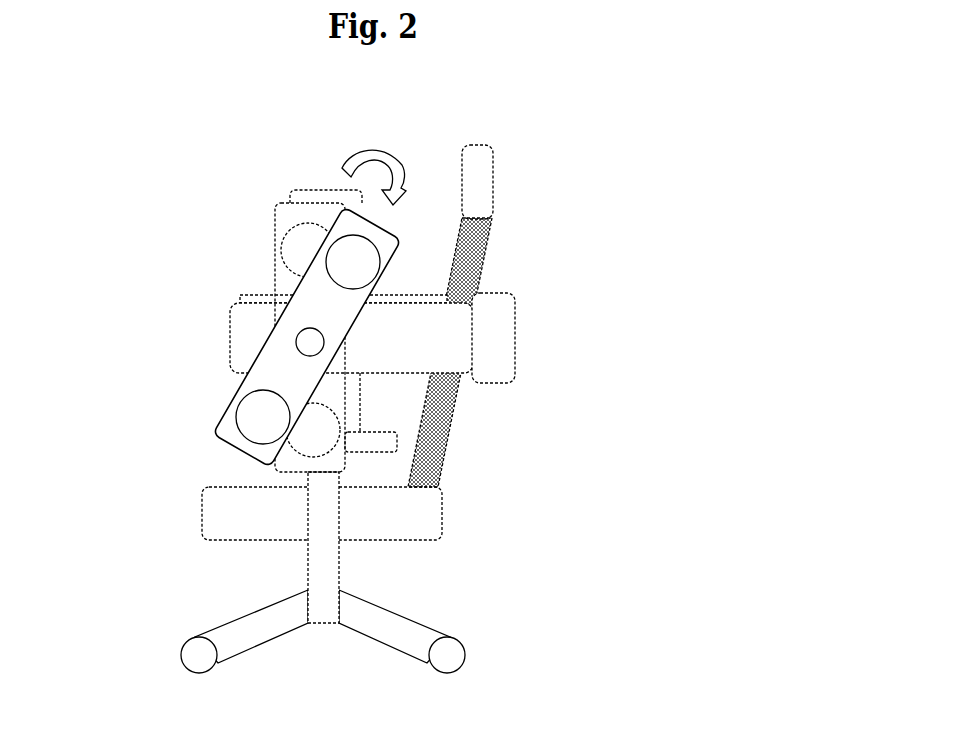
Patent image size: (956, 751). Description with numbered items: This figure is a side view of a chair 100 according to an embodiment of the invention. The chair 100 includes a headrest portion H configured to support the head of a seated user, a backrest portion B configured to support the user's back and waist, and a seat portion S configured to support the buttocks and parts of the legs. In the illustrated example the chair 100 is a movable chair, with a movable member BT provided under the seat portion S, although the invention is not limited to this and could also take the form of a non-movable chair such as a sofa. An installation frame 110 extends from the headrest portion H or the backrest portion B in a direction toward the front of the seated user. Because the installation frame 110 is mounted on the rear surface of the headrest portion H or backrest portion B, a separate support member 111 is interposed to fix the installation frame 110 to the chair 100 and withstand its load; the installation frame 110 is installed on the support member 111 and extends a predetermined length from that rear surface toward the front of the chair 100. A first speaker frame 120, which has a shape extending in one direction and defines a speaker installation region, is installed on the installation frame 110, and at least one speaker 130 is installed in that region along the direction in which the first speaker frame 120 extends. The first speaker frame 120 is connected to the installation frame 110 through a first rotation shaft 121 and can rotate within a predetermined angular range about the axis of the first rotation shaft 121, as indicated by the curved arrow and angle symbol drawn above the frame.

The chair 100 is at (643, 106).
The installation frame 110 is at (240, 327).
The support member 111 is at (503, 337).
The first speaker frame 120 is at (228, 432).
The first rotation shaft 121 is at (296, 342).
The speaker 130 is at (343, 250).
The headrest portion H is at (483, 177).
The backrest portion B is at (452, 415).
The seat portion S is at (213, 518).
The movable member BT is at (330, 572).